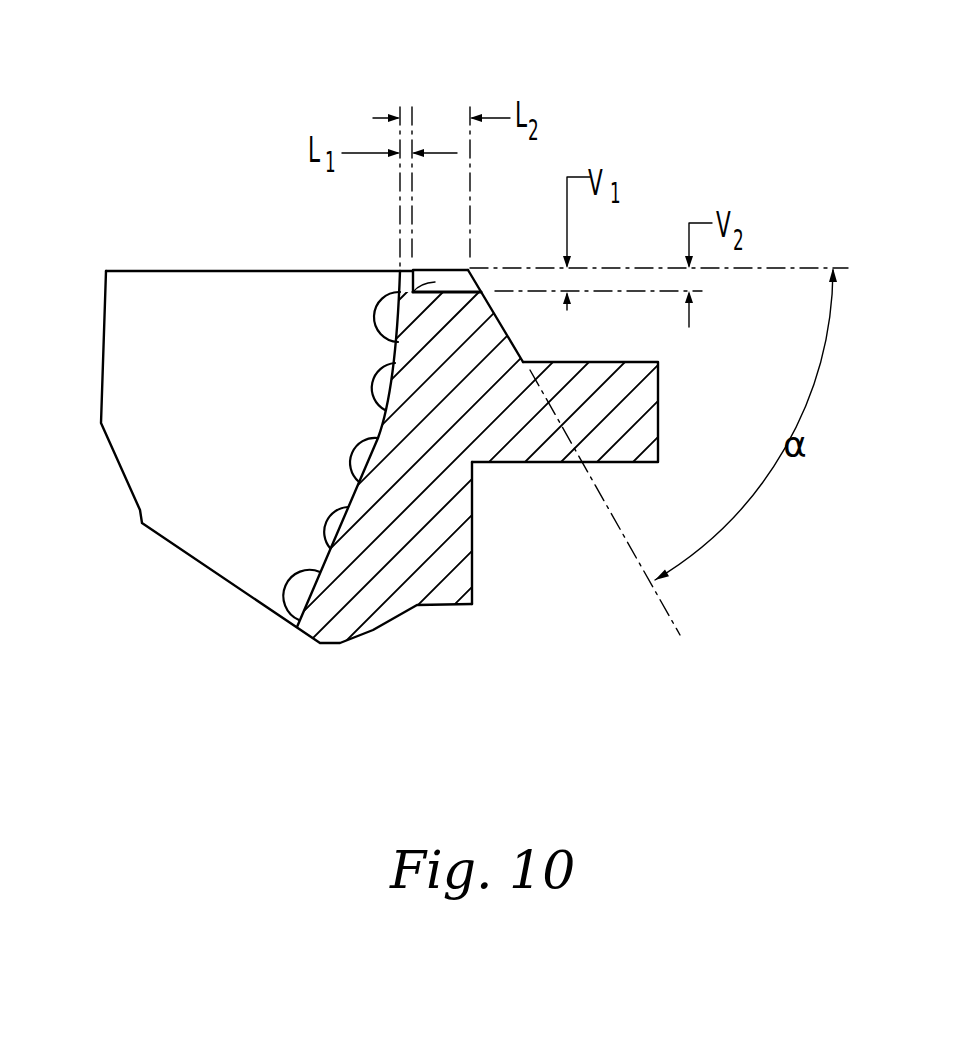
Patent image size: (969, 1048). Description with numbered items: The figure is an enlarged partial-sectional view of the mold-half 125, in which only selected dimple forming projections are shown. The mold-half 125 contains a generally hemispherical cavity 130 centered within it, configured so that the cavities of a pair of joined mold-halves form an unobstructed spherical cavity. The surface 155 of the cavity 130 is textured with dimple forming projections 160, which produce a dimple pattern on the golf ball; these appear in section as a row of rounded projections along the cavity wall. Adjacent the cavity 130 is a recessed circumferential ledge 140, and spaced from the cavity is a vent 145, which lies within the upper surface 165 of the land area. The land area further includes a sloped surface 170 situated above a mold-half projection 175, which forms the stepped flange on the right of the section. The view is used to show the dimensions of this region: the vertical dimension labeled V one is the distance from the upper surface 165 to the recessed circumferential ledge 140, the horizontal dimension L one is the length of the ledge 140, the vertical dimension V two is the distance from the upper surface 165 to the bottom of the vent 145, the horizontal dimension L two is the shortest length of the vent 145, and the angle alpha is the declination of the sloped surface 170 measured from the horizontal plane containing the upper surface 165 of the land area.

The mold-half 125 is at (493, 495).
The cavity 130 is at (182, 508).
The recessed circumferential ledge 140 is at (400, 271).
The vent 145 is at (380, 310).
The surface of the cavity 155 is at (377, 427).
The dimple forming projection 160 is at (330, 528).
The upper surface of the land area 165 is at (435, 270).
The sloped surface of the land area 170 is at (503, 317).
The mold-half projection 175 is at (660, 401).